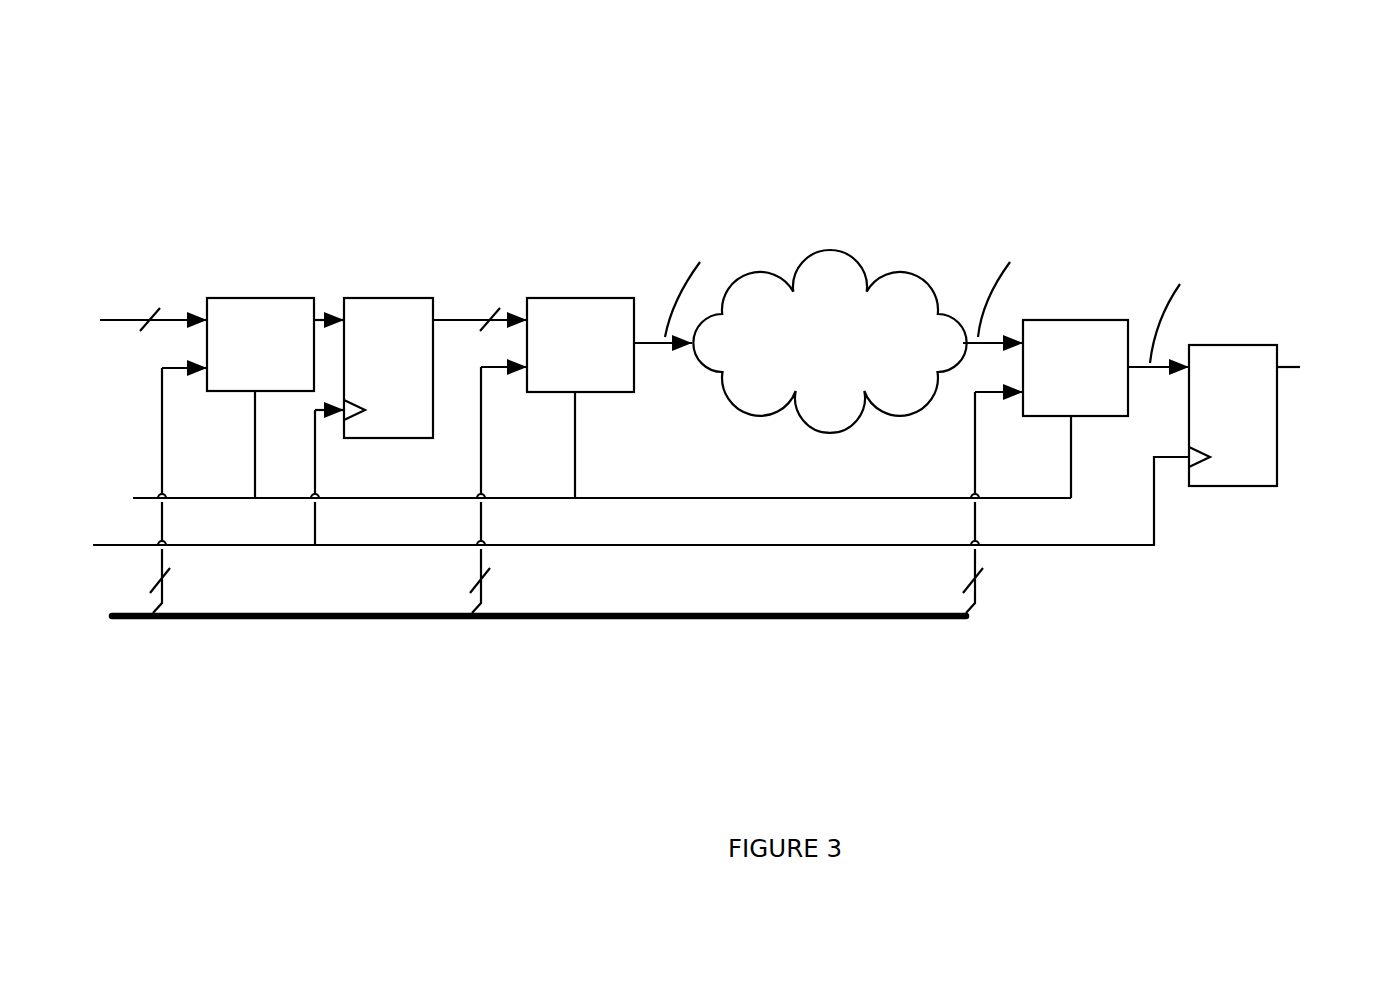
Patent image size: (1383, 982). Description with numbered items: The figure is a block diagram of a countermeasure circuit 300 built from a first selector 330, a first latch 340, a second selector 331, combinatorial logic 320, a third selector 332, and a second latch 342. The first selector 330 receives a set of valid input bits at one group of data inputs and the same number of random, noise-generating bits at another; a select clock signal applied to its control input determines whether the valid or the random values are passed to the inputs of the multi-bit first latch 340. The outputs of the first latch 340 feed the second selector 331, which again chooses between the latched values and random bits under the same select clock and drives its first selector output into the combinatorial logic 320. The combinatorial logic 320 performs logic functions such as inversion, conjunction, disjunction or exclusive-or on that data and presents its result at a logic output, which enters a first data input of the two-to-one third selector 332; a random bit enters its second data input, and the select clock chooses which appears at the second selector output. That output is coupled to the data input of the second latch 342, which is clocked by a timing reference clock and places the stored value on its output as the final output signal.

The countermeasure circuit 300 is at (490, 84).
The selector 330 is at (278, 297).
The latch 340 is at (420, 297).
The selector 331 is at (580, 297).
The combinatorial logic 320 is at (848, 406).
The selector 332 is at (1095, 320).
The latch 342 is at (1265, 345).